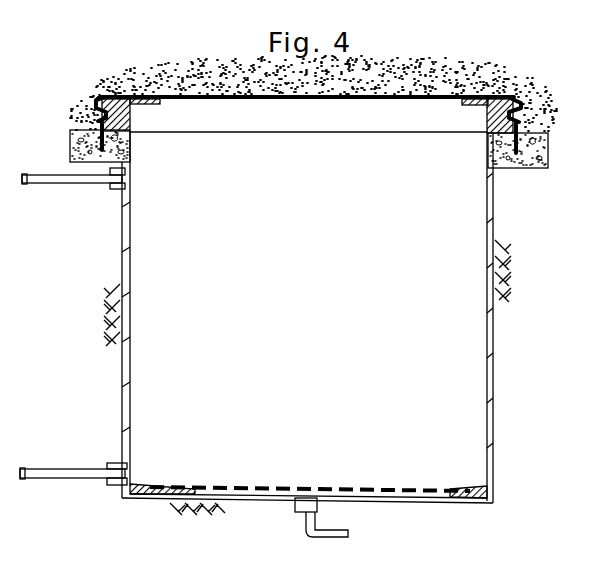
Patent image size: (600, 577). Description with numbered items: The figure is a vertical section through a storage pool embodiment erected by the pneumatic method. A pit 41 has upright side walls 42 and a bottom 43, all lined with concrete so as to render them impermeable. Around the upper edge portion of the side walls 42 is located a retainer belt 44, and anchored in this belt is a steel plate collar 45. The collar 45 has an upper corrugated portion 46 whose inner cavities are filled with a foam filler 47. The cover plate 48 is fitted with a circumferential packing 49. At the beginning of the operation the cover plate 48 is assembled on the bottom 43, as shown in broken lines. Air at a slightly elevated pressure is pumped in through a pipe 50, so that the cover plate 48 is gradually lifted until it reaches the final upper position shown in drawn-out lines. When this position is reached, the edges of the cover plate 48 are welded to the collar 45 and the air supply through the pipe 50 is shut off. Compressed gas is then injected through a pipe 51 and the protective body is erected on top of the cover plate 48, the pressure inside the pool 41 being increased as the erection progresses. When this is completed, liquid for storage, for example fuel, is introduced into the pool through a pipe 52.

The pit 41 is at (328, 333).
The upright side walls 42 is at (130, 277).
The bottom 43 is at (414, 504).
The retainer belt 44 is at (548, 160).
The steel plate collar 45 is at (102, 122).
The upper corrugated portion 46 is at (103, 108).
The foam filler 47 is at (130, 120).
The cover plate 48 is at (298, 99).
The circumferential packing 49 is at (470, 106).
The pipe 50 is at (333, 530).
The pipe 51 is at (63, 183).
The pipe 52 is at (80, 468).